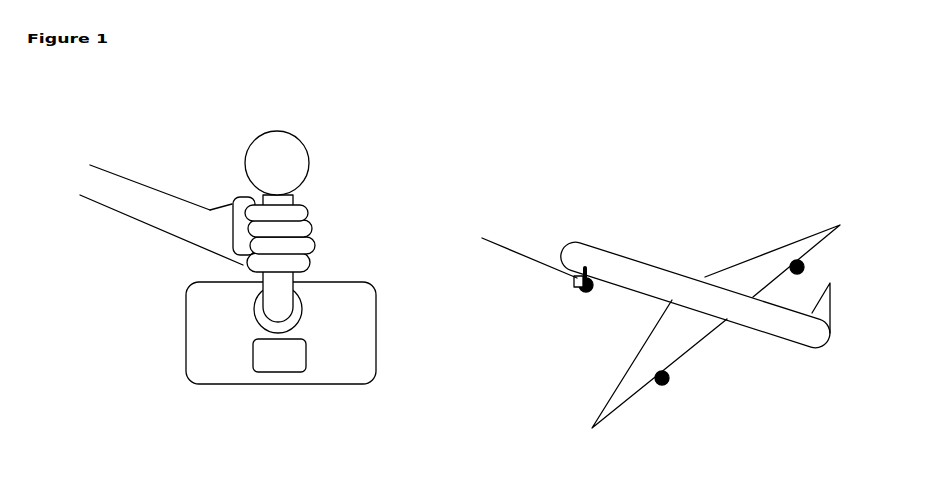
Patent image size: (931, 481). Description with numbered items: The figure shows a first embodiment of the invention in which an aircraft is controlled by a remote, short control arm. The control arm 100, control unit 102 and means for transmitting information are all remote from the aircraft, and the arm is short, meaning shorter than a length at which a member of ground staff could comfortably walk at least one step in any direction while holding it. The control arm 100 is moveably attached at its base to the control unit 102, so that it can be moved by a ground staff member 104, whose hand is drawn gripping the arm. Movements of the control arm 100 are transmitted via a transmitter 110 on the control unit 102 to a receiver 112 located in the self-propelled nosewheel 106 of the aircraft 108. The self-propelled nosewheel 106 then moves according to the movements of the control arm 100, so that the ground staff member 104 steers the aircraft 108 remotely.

The control arm 100 is at (292, 172).
The control unit 102 is at (207, 343).
The ground staff member 104 is at (182, 215).
The self-propelled nosewheel 106 is at (582, 290).
The aircraft 108 is at (632, 270).
The transmitter 110 is at (275, 362).
The receiver 112 is at (500, 248).